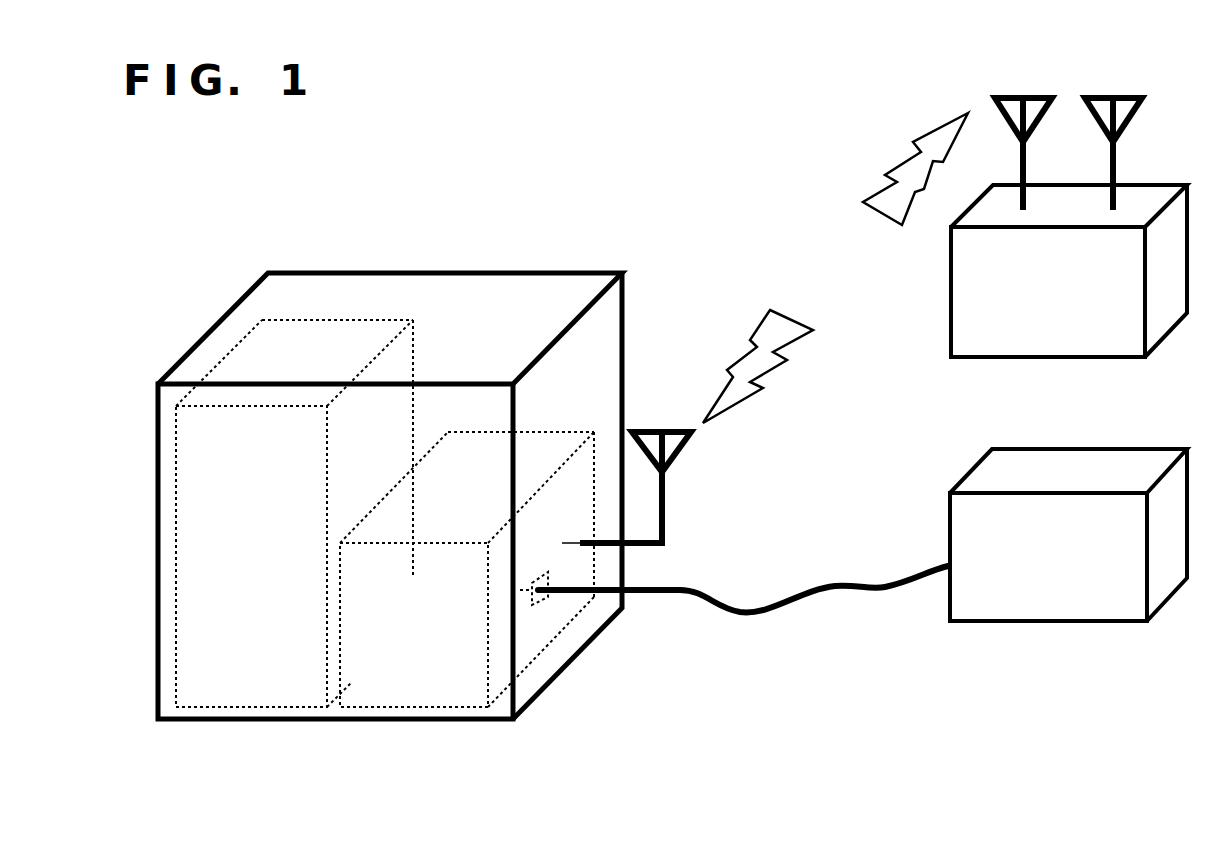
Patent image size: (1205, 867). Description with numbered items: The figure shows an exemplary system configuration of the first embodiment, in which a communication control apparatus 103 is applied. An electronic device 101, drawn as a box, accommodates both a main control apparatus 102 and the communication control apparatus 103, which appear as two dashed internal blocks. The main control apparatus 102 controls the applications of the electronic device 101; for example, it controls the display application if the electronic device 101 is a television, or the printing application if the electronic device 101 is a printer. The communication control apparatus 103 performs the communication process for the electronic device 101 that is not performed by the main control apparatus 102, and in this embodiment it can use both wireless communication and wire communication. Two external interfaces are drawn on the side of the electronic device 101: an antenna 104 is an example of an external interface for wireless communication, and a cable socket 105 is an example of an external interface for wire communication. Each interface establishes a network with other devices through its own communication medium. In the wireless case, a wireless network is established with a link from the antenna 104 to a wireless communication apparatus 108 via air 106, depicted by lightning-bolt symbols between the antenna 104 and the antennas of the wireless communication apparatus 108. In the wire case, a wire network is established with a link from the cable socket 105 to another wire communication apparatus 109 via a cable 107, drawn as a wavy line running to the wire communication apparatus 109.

The electronic device 101 is at (222, 320).
The main control apparatus 102 is at (243, 687).
The communication control apparatus 103 is at (393, 687).
The antenna 104 is at (664, 505).
The cable socket 105 is at (540, 593).
The air 106 is at (880, 190).
The cable 107 is at (750, 613).
The wireless communication apparatus 108 is at (1035, 357).
The wire communication apparatus 109 is at (1035, 621).